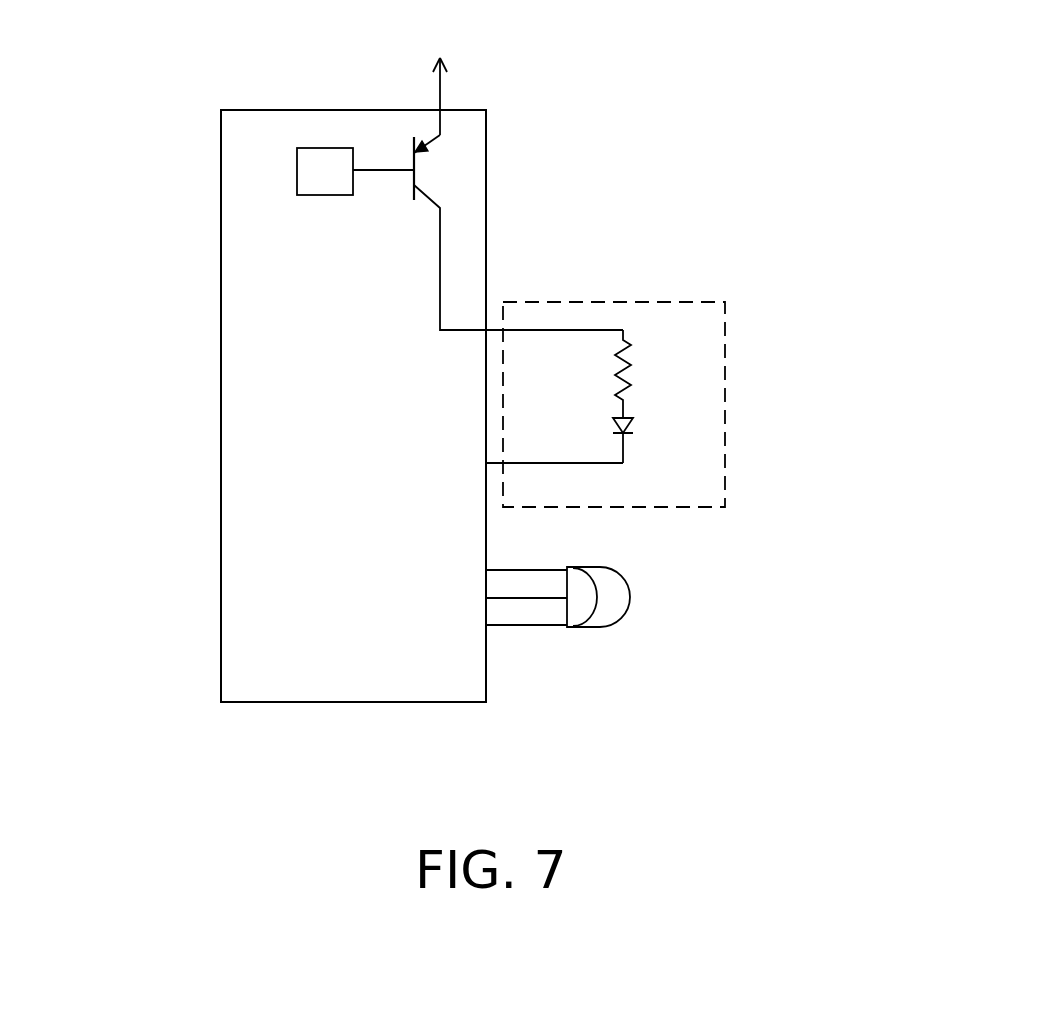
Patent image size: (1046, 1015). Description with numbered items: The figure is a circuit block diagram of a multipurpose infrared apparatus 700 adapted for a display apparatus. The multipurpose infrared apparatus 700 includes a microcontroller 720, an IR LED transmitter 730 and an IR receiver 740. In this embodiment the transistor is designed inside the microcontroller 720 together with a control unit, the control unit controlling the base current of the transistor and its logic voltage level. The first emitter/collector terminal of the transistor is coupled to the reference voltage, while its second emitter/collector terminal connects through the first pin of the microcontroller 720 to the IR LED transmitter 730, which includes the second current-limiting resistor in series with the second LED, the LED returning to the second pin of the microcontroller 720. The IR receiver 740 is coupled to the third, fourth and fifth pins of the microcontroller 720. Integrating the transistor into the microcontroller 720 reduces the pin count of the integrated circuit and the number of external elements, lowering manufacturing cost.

The multipurpose infrared apparatus 700 is at (768, 688).
The microcontroller 720 is at (243, 578).
The IR LED transmitter 730 is at (725, 440).
The IR receiver 740 is at (607, 603).